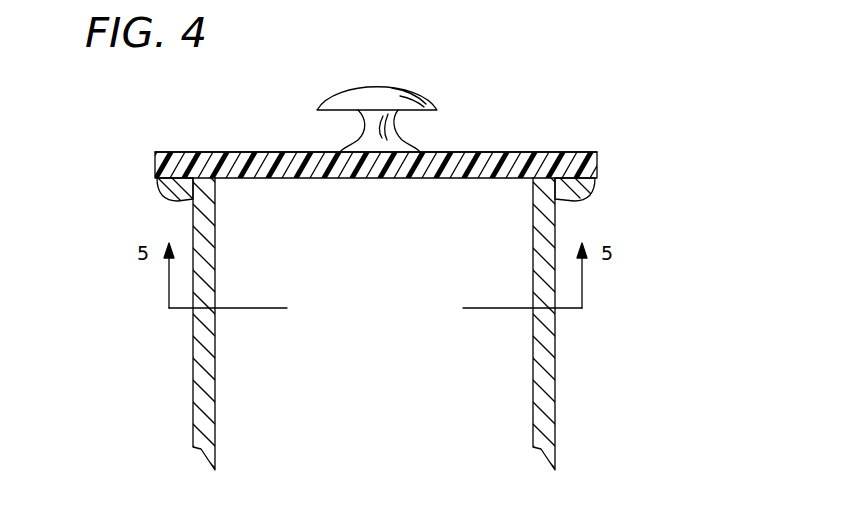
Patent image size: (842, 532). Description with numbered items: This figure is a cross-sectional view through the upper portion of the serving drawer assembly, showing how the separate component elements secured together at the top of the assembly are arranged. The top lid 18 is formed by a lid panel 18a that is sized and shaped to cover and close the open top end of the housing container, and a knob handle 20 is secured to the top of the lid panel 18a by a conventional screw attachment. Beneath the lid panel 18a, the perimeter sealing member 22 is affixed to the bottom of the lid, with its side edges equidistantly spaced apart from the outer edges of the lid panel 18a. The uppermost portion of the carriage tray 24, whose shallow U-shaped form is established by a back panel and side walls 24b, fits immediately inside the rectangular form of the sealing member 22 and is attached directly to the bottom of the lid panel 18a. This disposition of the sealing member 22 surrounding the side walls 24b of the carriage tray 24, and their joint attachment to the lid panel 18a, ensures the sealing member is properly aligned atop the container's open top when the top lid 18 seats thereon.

The top lid 18 is at (521, 146).
The lid panel 18a is at (155, 155).
The knob handle 20 is at (400, 85).
The sealing member 22 is at (170, 201).
The carriage tray 24 is at (193, 352).
The side walls 24b is at (555, 345).